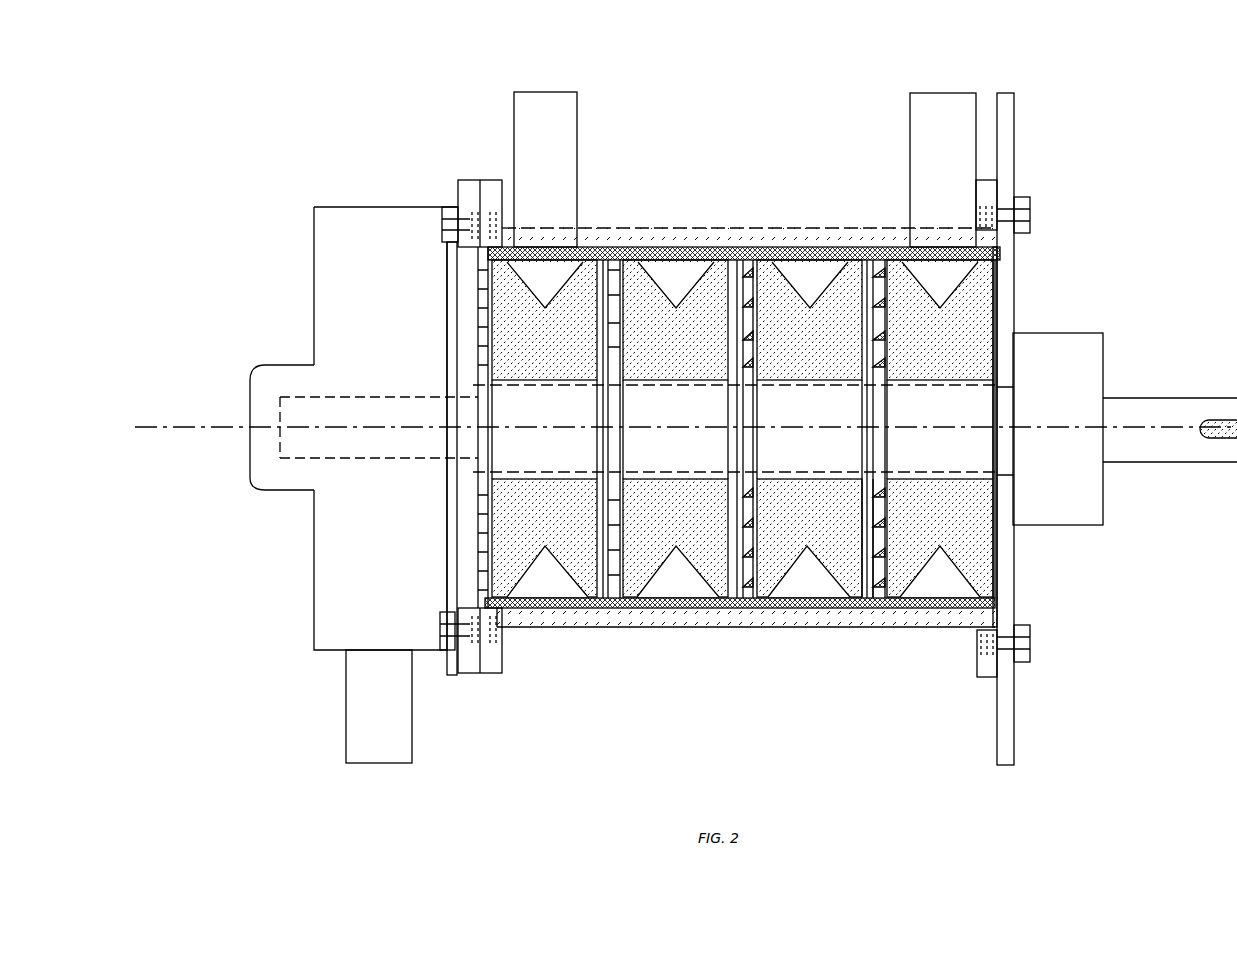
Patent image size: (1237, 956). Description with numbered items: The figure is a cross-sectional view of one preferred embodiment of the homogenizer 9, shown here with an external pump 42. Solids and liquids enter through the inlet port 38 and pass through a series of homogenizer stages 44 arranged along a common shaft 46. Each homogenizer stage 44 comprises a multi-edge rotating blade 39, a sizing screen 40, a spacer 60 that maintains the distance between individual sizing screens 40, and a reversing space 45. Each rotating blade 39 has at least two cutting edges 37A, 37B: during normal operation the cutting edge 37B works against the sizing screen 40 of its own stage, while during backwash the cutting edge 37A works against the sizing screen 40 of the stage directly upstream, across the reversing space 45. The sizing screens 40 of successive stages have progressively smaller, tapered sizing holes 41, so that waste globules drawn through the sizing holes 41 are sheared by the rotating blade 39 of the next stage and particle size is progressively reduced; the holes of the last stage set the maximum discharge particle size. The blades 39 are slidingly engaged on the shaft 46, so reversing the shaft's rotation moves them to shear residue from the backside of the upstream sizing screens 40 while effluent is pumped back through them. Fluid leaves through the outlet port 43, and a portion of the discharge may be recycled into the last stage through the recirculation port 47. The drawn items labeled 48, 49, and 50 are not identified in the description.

The homogenizer 9 is at (792, 627).
The cutting edge 37A is at (997, 300).
The cutting edge 37B is at (882, 593).
The inlet port 38 is at (950, 95).
The multi-edge rotating blade 39 is at (980, 293).
The sizing screen 40 is at (489, 242).
The sizing holes 41 is at (748, 262).
The external pump 42 is at (314, 240).
The outlet port 43 is at (374, 760).
The homogenizer stage 44 is at (578, 270).
The reversing space 45 is at (603, 585).
The shaft 46 is at (1158, 406).
The recirculation port 47 is at (557, 100).
The end plate 48 is at (1010, 148).
The input hub 49 is at (250, 393).
The bearing block 50 is at (1058, 337).
The spacer 60 is at (562, 610).